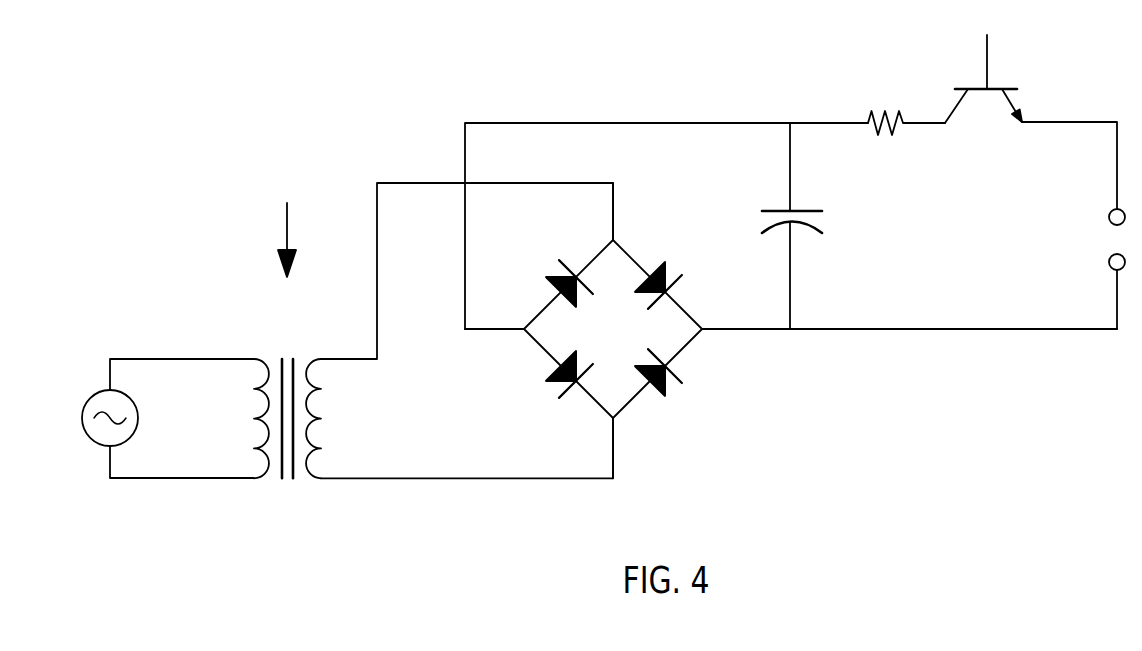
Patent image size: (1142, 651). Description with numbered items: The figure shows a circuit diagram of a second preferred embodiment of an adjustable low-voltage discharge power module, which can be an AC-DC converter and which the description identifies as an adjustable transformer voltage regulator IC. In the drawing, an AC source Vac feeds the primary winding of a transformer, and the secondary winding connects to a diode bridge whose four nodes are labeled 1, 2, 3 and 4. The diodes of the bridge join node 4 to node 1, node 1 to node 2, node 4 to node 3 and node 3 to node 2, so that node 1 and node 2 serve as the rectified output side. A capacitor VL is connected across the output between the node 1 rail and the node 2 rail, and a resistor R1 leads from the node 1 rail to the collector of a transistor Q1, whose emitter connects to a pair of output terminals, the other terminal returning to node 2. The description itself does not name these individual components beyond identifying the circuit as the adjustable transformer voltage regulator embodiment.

The bridge rectifier output node 1 is at (604, 211).
The bridge rectifier node 2 is at (731, 318).
The bridge rectifier node 3 is at (604, 448).
The bridge rectifier node 4 is at (494, 318).
The resistor R1 is at (906, 106).
The transistor Q1 is at (1031, 122).
The capacitor / load voltage VL is at (812, 226).
The AC voltage source Vac is at (148, 418).